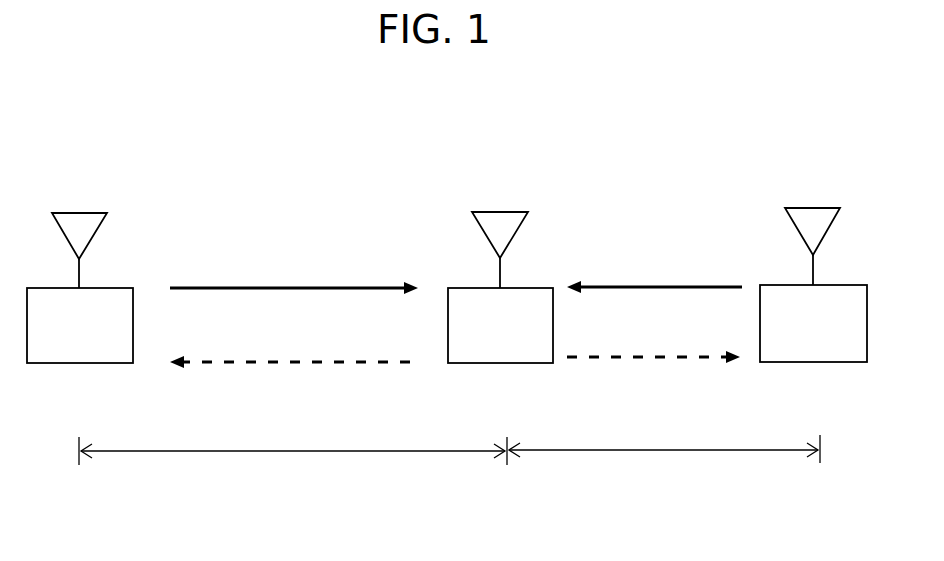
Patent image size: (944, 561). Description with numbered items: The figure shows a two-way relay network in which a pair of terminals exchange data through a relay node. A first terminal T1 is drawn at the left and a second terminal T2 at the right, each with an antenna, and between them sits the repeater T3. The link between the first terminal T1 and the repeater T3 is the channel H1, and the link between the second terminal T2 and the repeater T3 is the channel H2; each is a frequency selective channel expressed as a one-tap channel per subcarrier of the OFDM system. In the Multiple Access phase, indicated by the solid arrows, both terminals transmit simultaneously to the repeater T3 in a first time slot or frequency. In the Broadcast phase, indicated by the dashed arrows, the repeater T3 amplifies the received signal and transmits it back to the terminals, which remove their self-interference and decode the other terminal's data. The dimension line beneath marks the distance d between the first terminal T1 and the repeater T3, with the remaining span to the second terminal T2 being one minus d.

The first terminal T1 is at (80, 320).
The second terminal T2 is at (813, 315).
The repeater T3 is at (500, 319).
The channel between first terminal and repeater H1 is at (294, 325).
The channel between second terminal and repeater H2 is at (654, 325).
The distance between the terminal and the repeater d is at (449, 470).